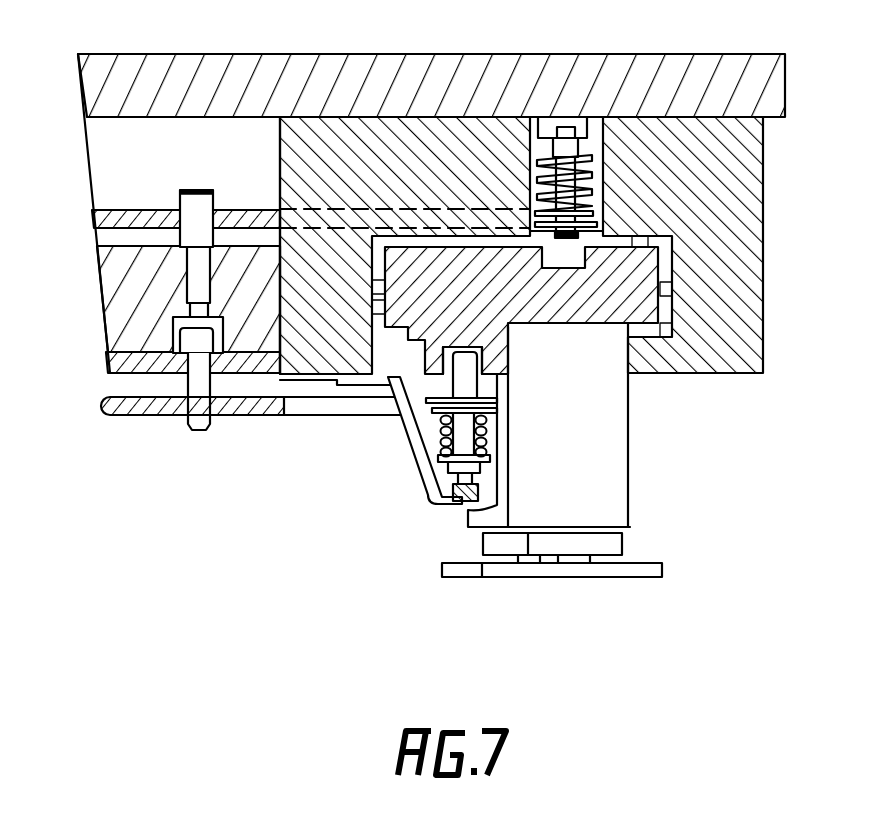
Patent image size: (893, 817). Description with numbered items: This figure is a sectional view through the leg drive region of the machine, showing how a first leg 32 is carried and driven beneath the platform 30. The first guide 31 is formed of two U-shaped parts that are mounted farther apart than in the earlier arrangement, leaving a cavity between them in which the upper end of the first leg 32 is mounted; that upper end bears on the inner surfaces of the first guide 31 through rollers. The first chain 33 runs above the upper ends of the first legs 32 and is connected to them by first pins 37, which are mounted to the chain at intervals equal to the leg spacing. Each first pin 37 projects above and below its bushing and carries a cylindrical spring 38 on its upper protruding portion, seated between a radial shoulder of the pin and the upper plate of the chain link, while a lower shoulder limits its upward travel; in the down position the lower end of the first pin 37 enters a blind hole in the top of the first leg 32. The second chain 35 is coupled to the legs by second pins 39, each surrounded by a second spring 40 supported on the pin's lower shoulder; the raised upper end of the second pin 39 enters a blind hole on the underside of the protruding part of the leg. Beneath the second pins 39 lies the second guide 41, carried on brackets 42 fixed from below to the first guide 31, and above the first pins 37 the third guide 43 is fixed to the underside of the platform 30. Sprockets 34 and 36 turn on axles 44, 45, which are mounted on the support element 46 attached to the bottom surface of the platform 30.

The platform 30 is at (748, 80).
The first guide 31 is at (303, 152).
The first leg 32 is at (480, 520).
The first chain 33 is at (606, 218).
The sprocket 34 is at (120, 215).
The second chain 35 is at (445, 430).
The sprocket 36 is at (105, 400).
The first pin 37 is at (592, 165).
The spring 38 is at (583, 152).
The second pin 39 is at (450, 498).
The second spring 40 is at (437, 462).
The second guide 41 is at (455, 505).
The bracket 42 is at (397, 413).
The third guide 43 is at (548, 117).
The axle 44 is at (187, 203).
The axle 45 is at (192, 425).
The support element 46 is at (120, 275).